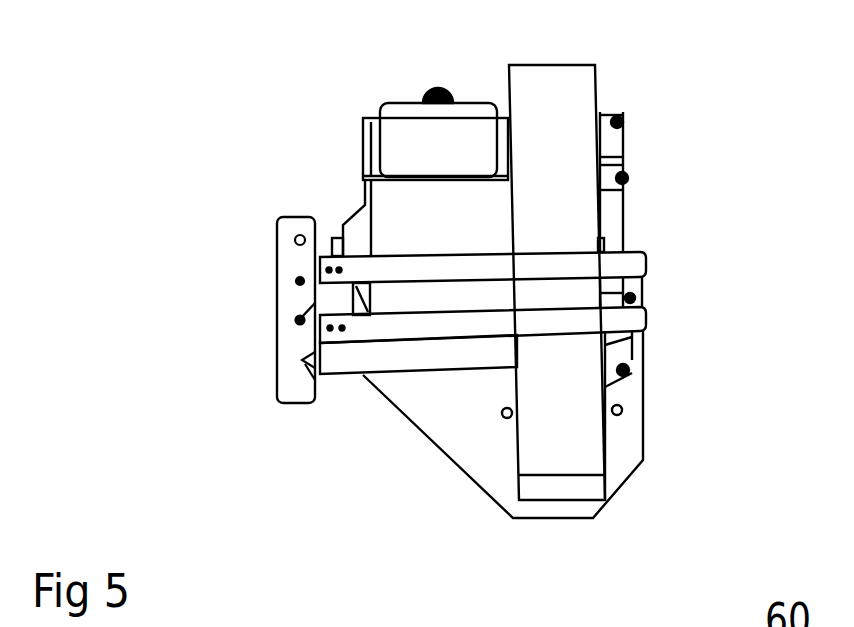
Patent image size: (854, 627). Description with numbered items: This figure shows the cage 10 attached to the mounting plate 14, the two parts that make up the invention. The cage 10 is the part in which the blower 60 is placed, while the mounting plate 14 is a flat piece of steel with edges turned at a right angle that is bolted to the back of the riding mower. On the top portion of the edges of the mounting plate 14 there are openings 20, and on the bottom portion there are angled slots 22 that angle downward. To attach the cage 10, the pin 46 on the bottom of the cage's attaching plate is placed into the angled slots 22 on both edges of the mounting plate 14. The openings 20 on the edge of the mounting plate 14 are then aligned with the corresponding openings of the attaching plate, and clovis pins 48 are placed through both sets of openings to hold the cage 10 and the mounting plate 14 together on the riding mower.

The cage 10 is at (618, 323).
The mounting plate 14 is at (280, 403).
The openings 20 is at (293, 240).
The angled slots 22 is at (300, 320).
The pin 46 is at (303, 365).
The clovis pins 48 is at (293, 282).
The blower 60 is at (563, 121).